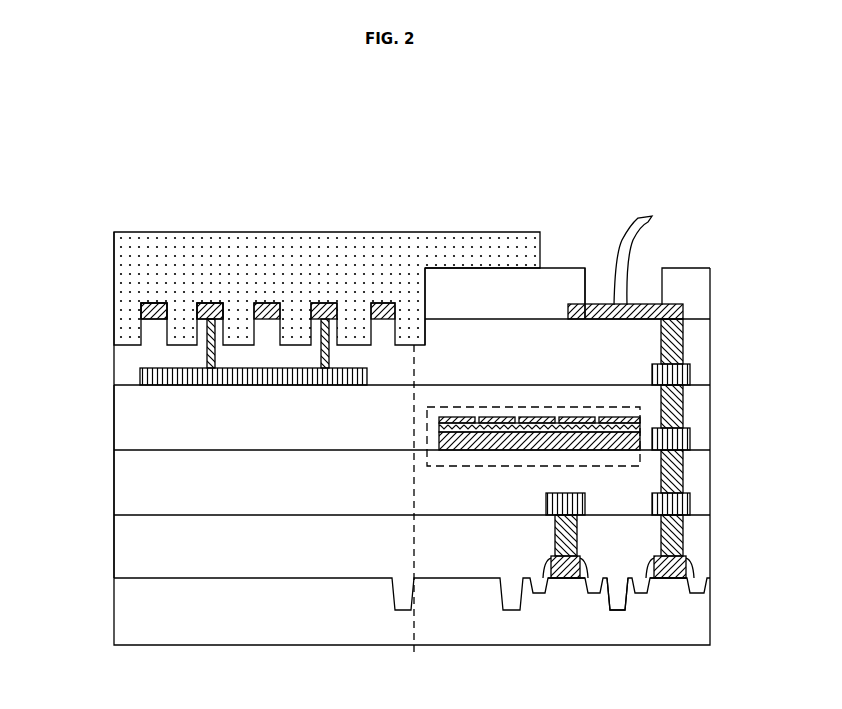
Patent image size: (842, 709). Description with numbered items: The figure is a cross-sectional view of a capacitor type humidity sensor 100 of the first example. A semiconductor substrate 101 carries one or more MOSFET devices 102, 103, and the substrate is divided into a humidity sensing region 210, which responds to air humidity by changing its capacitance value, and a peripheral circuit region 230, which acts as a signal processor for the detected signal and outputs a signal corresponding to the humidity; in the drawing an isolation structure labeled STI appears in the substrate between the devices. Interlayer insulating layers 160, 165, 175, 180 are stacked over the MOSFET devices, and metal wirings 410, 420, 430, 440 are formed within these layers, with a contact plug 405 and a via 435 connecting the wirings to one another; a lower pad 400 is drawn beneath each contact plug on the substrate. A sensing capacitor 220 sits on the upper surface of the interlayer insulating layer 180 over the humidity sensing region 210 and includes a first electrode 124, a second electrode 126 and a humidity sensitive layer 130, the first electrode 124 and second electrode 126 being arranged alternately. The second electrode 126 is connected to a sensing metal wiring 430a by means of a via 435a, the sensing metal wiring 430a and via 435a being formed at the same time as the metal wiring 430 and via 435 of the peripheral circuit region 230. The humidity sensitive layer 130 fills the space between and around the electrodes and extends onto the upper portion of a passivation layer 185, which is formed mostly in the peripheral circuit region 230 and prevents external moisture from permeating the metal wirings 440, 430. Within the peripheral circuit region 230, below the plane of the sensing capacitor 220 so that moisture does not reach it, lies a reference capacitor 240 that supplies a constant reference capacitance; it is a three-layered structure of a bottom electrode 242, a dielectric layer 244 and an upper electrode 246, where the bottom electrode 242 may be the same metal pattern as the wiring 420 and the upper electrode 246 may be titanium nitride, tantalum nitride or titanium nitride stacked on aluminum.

The capacitor type humidity sensor 100 is at (427, 106).
The semiconductor substrate 101 is at (686, 614).
The MOSFET device 102 is at (565, 580).
The MOSFET device 103 is at (672, 580).
The shallow trench isolation STI is at (617, 612).
The first electrode 124 is at (150, 302).
The second electrode 126 is at (207, 302).
The humidity sensitive layer 130 is at (176, 262).
The interlayer insulating layer 160 is at (145, 547).
The interlayer insulating layer 165 is at (145, 485).
The interlayer insulating layer 175 is at (145, 427).
The interlayer insulating layer 180 is at (491, 358).
The passivation layer 185 is at (551, 304).
The humidity sensing region 210 is at (263, 158).
The sensing capacitor 220 is at (216, 178).
The peripheral circuit region 230 is at (599, 158).
The reference capacitor 240 is at (445, 468).
The bottom electrode 242 is at (640, 448).
The dielectric layer 244 is at (640, 430).
The upper electrode 246 is at (640, 419).
The contact pad 400 is at (688, 568).
The contact plug 405 is at (684, 530).
The metal wiring 410 is at (684, 503).
The metal wiring 420 is at (684, 438).
The metal wiring 430 is at (684, 373).
The sensing metal wiring 430a is at (142, 374).
The via 435 is at (684, 340).
The via 435a is at (209, 346).
The metal wiring 440 is at (684, 312).